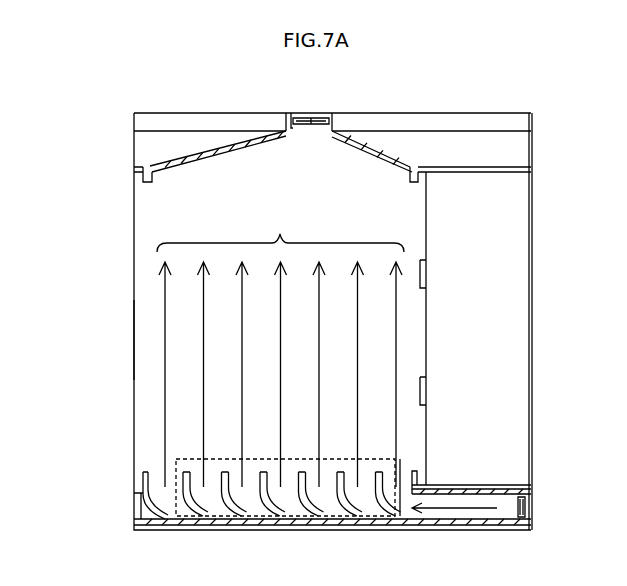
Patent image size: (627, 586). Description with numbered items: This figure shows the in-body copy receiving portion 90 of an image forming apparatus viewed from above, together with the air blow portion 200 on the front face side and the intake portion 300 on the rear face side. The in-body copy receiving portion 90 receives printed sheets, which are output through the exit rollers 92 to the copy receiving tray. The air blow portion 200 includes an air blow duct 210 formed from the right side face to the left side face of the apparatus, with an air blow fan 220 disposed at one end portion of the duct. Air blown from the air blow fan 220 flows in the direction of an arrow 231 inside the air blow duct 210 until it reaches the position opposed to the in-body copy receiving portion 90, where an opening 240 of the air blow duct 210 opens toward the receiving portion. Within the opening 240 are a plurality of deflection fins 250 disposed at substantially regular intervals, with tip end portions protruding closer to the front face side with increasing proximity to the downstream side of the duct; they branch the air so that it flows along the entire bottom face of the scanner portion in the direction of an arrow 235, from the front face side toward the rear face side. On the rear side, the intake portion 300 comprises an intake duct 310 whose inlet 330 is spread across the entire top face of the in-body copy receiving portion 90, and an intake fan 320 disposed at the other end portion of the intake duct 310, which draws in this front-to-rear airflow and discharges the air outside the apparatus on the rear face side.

The in-body copy receiving portion 90 is at (105, 343).
The exit rollers 92 is at (443, 336).
The air blow portion 200 is at (114, 519).
The air blow duct 210 is at (470, 496).
The air blow fan 220 is at (525, 510).
The arrow 231 is at (458, 508).
The arrow 235 is at (280, 346).
The opening 240 is at (418, 454).
The deflection fins 250 is at (298, 510).
The intake portion 300 is at (378, 120).
The intake duct 310 is at (155, 163).
The intake fan 320 is at (293, 119).
The inlet 330 is at (221, 198).